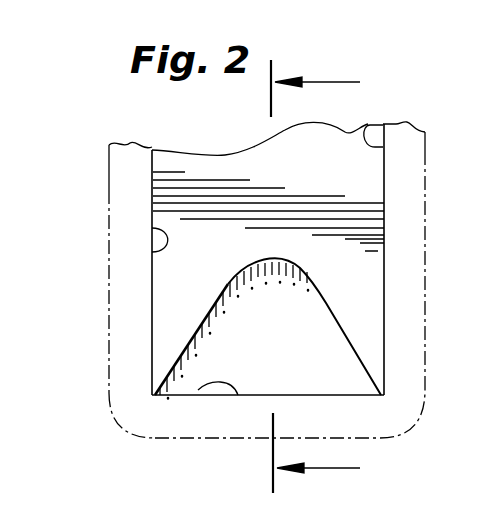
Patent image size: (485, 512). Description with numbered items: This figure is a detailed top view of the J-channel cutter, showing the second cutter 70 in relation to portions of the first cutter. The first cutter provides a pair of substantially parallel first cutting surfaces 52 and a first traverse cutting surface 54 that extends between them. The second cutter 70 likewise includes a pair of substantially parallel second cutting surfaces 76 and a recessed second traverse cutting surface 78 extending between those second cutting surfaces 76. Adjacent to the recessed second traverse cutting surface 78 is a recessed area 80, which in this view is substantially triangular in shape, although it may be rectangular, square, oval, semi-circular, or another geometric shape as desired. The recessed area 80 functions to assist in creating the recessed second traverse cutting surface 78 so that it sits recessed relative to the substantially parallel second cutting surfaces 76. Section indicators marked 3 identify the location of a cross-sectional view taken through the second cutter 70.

The section line for FIG. 3 is at (324, 276).
The first cutting surfaces 52 is at (135, 280).
The first traverse cutting surface 54 is at (247, 417).
The second cutter 70 is at (331, 174).
The second cutting surfaces 76 is at (366, 124).
The recessed second traverse cutting surface 78 is at (198, 390).
The recessed area 80 is at (287, 343).